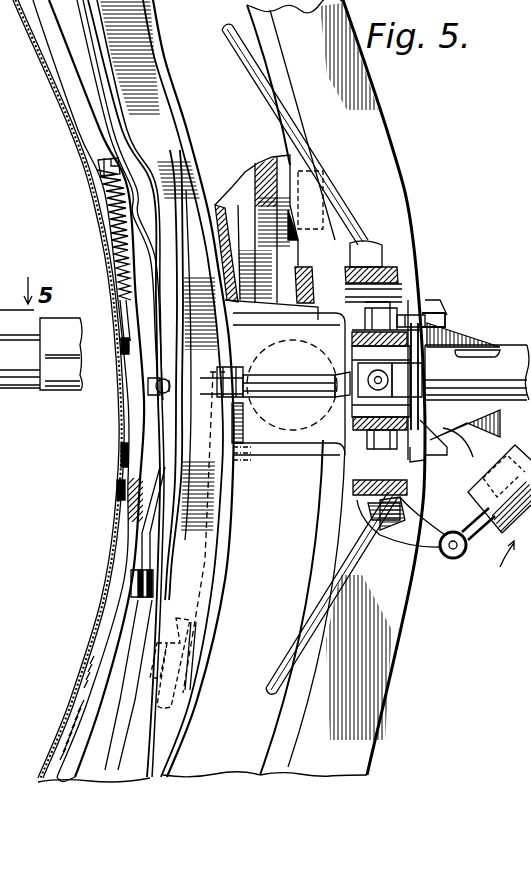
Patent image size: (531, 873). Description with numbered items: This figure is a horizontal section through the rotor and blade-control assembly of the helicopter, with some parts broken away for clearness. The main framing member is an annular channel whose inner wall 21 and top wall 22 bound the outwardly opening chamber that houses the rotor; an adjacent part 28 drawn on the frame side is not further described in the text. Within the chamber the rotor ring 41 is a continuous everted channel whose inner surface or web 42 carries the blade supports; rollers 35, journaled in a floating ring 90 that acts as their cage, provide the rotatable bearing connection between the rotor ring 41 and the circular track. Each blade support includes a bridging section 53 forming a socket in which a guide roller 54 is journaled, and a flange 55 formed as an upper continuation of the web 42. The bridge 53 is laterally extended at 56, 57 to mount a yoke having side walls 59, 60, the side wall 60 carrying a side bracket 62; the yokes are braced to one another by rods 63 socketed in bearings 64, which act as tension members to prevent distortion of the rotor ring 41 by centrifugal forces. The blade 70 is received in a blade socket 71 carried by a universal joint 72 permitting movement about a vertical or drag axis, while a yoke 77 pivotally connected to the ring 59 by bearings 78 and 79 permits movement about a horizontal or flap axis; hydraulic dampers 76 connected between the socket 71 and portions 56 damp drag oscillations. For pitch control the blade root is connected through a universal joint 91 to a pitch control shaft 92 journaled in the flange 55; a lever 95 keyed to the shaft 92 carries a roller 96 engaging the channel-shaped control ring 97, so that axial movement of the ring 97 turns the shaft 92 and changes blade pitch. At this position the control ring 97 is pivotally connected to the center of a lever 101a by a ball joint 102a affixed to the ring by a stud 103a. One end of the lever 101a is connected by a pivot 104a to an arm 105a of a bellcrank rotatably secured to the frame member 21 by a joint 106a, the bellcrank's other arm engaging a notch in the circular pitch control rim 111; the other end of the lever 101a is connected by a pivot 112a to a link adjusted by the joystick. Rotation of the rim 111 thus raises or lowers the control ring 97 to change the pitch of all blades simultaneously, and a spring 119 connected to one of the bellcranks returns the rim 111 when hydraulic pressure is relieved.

The inner wall 21 is at (116, 522).
The top wall 22 is at (373, 143).
The brake band 28 is at (110, 550).
The rollers 35 is at (330, 195).
The rotor ring 41 is at (275, 744).
The inner surface or web 42 is at (213, 237).
The bridging section 53 is at (262, 437).
The guide roller 54 is at (289, 398).
The flange or web 55 is at (237, 362).
The lateral extension 56 is at (408, 462).
The lateral extension 57 is at (388, 316).
The side wall 59 is at (448, 243).
The side wall 60 is at (410, 484).
The side bracket 62 is at (430, 530).
The rods 63 is at (267, 100).
The bearings 64 is at (383, 263).
The blade 70 is at (43, 390).
The blade socket 71 is at (503, 345).
The universal joint 72 is at (418, 322).
The hydraulic damper 76 is at (502, 564).
The yoke 77 is at (445, 318).
The bearing 78 is at (405, 316).
The bearing 79 is at (380, 450).
The floating ring 90 is at (245, 170).
The universal joint 91 is at (496, 492).
The pitch control shaft 92 is at (297, 373).
The lever 95 is at (213, 528).
The roller 96 is at (196, 640).
The control ring 97 is at (167, 123).
The lever 101a is at (157, 430).
The ball joint 102a is at (147, 392).
The stud 103a is at (157, 378).
The pivot 104a is at (98, 186).
The bellcrank arm 105a is at (117, 277).
The joint 106a is at (123, 342).
The pitch control rim 111 is at (100, 672).
The pivot 112a is at (131, 585).
The spring 119 is at (100, 220).